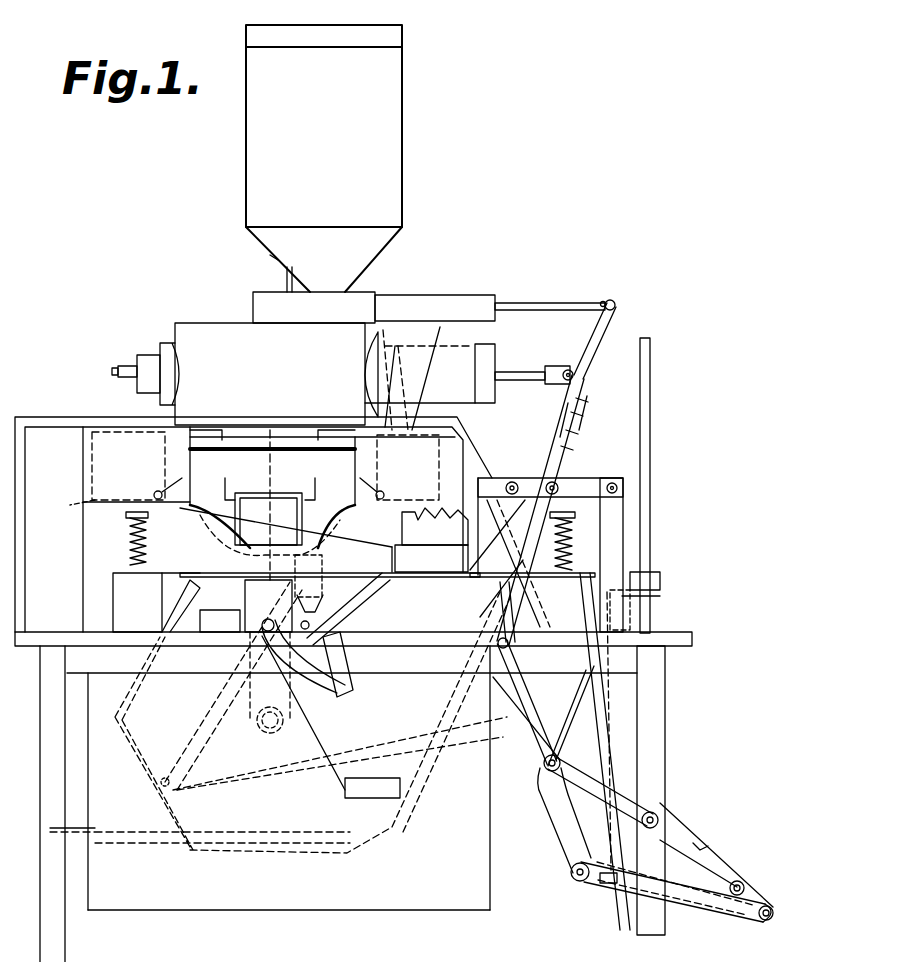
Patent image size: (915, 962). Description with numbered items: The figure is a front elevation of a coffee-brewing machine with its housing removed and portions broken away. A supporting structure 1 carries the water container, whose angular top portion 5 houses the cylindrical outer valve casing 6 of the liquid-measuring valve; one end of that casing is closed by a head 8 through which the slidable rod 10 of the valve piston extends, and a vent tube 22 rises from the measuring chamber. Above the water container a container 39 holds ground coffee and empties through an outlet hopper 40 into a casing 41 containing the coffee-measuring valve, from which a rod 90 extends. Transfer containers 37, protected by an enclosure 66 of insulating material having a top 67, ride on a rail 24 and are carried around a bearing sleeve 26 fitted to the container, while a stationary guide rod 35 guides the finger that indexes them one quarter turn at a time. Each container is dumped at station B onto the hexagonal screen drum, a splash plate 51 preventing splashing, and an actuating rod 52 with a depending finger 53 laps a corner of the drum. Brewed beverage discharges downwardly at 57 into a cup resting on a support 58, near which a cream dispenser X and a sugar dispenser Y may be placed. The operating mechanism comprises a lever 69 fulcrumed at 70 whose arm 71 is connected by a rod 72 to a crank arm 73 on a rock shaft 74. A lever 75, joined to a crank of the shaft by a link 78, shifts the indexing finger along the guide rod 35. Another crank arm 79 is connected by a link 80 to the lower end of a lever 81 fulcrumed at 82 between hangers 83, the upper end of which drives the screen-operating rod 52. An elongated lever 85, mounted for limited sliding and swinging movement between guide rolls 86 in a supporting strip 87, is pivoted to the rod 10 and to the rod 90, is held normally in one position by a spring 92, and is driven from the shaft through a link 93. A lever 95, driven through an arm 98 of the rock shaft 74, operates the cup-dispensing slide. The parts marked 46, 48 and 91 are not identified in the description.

The supporting structure 1 is at (666, 745).
The angular top portion 5 is at (226, 326).
The cylindrical outer valve casing 6 is at (164, 344).
The head 8 is at (131, 366).
The slidable rod 10 is at (526, 373).
The vent tube 22 is at (284, 276).
The rail 24 is at (196, 510).
The bearing sleeve 26 is at (342, 548).
The stationary guide rod 35 is at (78, 418).
The transfer container 37 is at (275, 500).
The container for ground coffee 39 is at (388, 166).
The outlet hopper 40 is at (272, 254).
The casing 41 is at (432, 296).
The housing 46 is at (270, 912).
The link in alternate position 48 is at (135, 755).
The splash plate 51 is at (330, 542).
The actuating rod 52 is at (200, 578).
The depending finger 53 is at (188, 584).
The discharge of delivery spout 57 is at (360, 680).
The support 58 is at (345, 790).
The enclosure of insulating material 66 is at (90, 452).
The top of enclosure 67 is at (198, 430).
The lever 69 is at (651, 416).
The fulcrum 70 is at (661, 582).
The arm 71 is at (661, 596).
The rod 72 is at (612, 700).
The crank arm 73 is at (622, 830).
The rock shaft 74 is at (660, 818).
The lever 75 is at (256, 718).
The link 78 is at (266, 780).
The crank arm 79 is at (712, 850).
The link 80 is at (586, 885).
The lever 81 is at (552, 820).
The fulcrum 82 is at (544, 764).
The hangers 83 is at (578, 716).
The elongated lever 85 is at (555, 468).
The guide rolls 86 is at (565, 488).
The supporting strip 87 is at (600, 480).
The rod 90 is at (566, 303).
The link 91 is at (683, 885).
The spring 92 is at (136, 845).
The link 93 is at (505, 722).
The lever 95 is at (630, 716).
The arm 98 is at (725, 872).
The station B is at (290, 418).
The cream dispenser X is at (295, 722).
The sugar dispenser Y is at (333, 715).